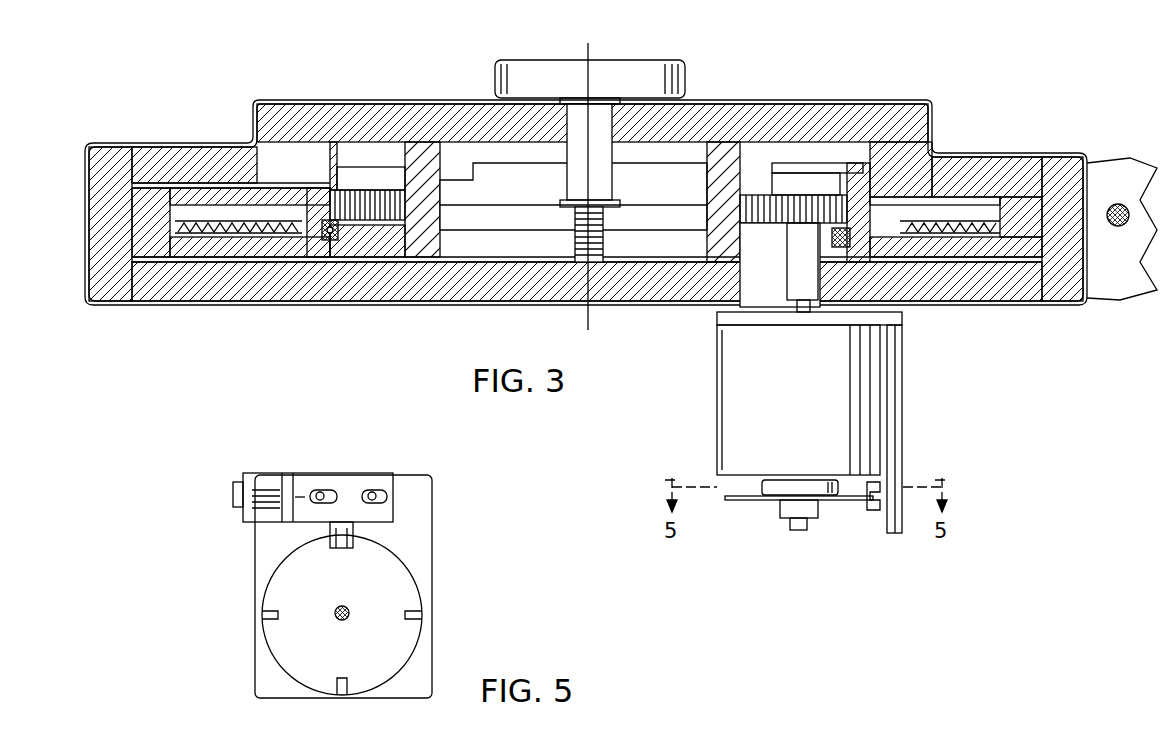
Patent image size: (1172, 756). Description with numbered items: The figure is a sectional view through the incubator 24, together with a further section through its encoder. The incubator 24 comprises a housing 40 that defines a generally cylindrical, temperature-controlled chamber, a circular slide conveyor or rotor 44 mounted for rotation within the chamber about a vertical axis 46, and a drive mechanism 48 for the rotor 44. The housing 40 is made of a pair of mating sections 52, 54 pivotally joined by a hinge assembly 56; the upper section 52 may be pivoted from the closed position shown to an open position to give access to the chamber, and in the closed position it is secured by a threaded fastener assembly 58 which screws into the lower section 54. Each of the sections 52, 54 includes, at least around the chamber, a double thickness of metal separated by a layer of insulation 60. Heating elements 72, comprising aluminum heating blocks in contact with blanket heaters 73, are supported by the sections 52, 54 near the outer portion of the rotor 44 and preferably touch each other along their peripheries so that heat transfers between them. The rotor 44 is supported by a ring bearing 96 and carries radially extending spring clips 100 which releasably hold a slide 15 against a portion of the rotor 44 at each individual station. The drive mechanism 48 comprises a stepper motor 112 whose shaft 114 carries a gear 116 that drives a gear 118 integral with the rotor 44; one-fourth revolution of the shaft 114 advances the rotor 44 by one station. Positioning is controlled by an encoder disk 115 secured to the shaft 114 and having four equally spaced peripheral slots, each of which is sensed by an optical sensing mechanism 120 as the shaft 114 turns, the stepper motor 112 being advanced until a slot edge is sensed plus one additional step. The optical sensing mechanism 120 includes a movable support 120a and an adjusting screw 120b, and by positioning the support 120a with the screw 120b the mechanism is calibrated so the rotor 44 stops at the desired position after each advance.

In FIG. 3, the incubator 24 is at (796, 92).
In FIG. 3, the housing 40 is at (945, 112).
In FIG. 3, the mating section 52 is at (366, 100).
In FIG. 3, the mating section 54 is at (383, 318).
In FIG. 3, the hinge assembly 56 is at (1107, 152).
In FIG. 3, the threaded fastener assembly 58 is at (690, 73).
In FIG. 3, the vertical axis 46 is at (590, 62).
In FIG. 3, the insulation 60 is at (155, 160).
In FIG. 3, the heating element 72 is at (130, 198).
In FIG. 3, the blanket heater 73 is at (138, 180).
In FIG. 3, the spring clip 100 is at (222, 228).
In FIG. 3, the slide 15 is at (236, 236).
In FIG. 3, the rotor 44 is at (336, 232).
In FIG. 3, the ring bearing 96 is at (332, 242).
In FIG. 3, the gear 116 is at (732, 212).
In FIG. 3, the gear 118 is at (805, 235).
In FIG. 3, the shaft 114 is at (798, 300).
In FIG. 5, the shaft 114 is at (350, 610).
In FIG. 3, the drive mechanism 48 is at (769, 437).
In FIG. 3, the stepper motor 112 is at (808, 415).
In FIG. 3, the encoder disk 115 is at (762, 500).
In FIG. 5, the encoder disk 115 is at (274, 646).
In FIG. 3, the optical sensing mechanism 120 is at (870, 512).
In FIG. 5, the optical sensing mechanism 120 is at (358, 535).
In FIG. 5, the movable support 120a is at (350, 484).
In FIG. 5, the adjusting screw 120b is at (236, 505).